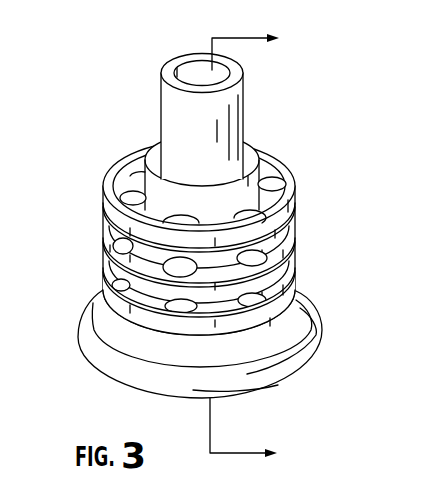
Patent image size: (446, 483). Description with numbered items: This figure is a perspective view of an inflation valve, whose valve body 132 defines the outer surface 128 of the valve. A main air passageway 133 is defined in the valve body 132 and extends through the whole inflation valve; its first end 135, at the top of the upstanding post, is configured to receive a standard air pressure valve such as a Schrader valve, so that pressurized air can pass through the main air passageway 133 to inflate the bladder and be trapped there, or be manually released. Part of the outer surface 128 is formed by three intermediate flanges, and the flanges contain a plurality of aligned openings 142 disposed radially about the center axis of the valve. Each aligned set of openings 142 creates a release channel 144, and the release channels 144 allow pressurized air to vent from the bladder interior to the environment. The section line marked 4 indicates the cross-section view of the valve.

The section line for FIG. 4 is at (257, 245).
The outer surface 128 is at (297, 213).
The valve body 132 is at (196, 241).
The main air passageway 133 is at (201, 70).
The first end 135 is at (225, 110).
The aligned openings 142 is at (266, 181).
The release channel 144 is at (110, 193).